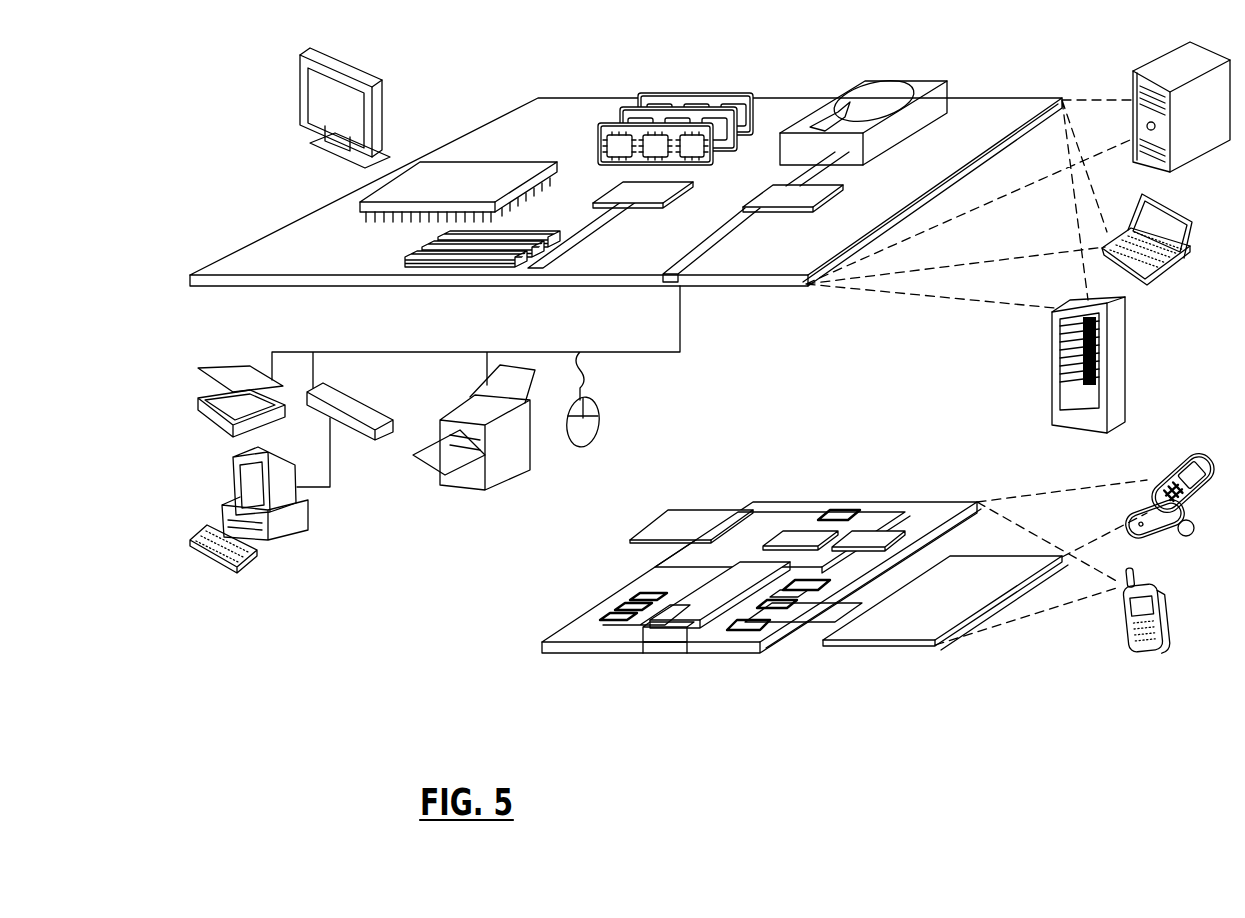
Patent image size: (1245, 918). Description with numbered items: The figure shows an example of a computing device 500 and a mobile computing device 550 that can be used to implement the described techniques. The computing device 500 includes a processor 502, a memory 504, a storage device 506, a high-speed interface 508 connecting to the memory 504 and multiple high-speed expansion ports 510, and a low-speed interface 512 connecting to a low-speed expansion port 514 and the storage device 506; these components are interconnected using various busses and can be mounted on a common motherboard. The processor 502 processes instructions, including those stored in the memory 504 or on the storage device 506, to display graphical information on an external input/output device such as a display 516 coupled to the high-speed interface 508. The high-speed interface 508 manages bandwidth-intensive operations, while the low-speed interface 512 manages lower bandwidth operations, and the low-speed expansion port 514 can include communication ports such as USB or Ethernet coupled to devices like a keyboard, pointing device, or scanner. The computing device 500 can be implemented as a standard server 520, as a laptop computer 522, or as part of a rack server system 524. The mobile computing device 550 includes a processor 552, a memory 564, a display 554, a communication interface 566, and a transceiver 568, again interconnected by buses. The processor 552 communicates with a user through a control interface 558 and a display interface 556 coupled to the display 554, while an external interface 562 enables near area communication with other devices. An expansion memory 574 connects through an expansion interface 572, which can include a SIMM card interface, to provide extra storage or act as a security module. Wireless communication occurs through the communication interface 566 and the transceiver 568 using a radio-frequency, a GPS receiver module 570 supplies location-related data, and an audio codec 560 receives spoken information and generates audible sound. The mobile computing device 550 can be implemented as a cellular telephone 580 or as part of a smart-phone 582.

The computing device 500 is at (470, 70).
The processor 502 is at (360, 203).
The memory 504 is at (641, 122).
The storage device 506 is at (864, 92).
The high-speed interface 508 is at (595, 196).
The high-speed expansion ports 510 is at (412, 253).
The low-speed interface 512 is at (771, 185).
The low-speed expansion port 514 is at (688, 284).
The display 516 is at (312, 54).
The standard server 520 is at (1134, 96).
The laptop computer 522 is at (1193, 222).
The rack server system 524 is at (1052, 390).
The mobile computing device 550 is at (515, 656).
The processor 552 is at (697, 620).
The display 554 is at (922, 643).
The display interface 556 is at (757, 624).
The control interface 558 is at (788, 610).
The audio codec 560 is at (808, 585).
The external interface 562 is at (673, 638).
The memory 564 is at (626, 607).
The communication interface 566 is at (803, 540).
The transceiver 568 is at (868, 537).
The GPS receiver module 570 is at (843, 502).
The expansion interface 572 is at (741, 510).
The expansion memory 574 is at (676, 511).
The cellular telephone 580 is at (1175, 470).
The smart-phone 582 is at (1126, 622).